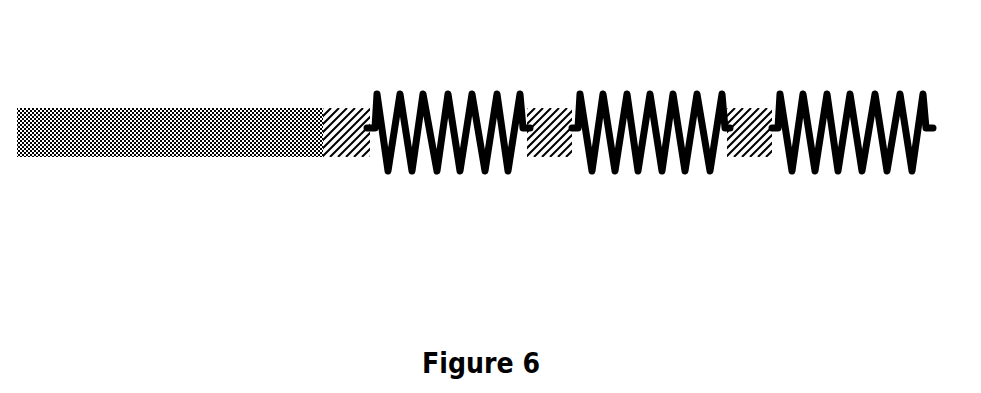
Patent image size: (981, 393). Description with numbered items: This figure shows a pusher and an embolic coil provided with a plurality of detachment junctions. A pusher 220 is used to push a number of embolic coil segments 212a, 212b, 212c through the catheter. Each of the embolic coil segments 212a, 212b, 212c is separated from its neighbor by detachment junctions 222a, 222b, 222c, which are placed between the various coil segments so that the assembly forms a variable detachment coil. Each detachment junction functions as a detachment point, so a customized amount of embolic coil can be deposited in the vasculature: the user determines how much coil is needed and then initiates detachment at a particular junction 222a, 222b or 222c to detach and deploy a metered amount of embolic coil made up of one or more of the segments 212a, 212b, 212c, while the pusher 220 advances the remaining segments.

The pusher 220 is at (112, 158).
The detachment junction 222a is at (352, 158).
The detachment junction 222b is at (545, 159).
The detachment junction 222c is at (748, 160).
The embolic coil segment 212a is at (433, 82).
The embolic coil segment 212b is at (618, 88).
The embolic coil segment 212c is at (840, 88).